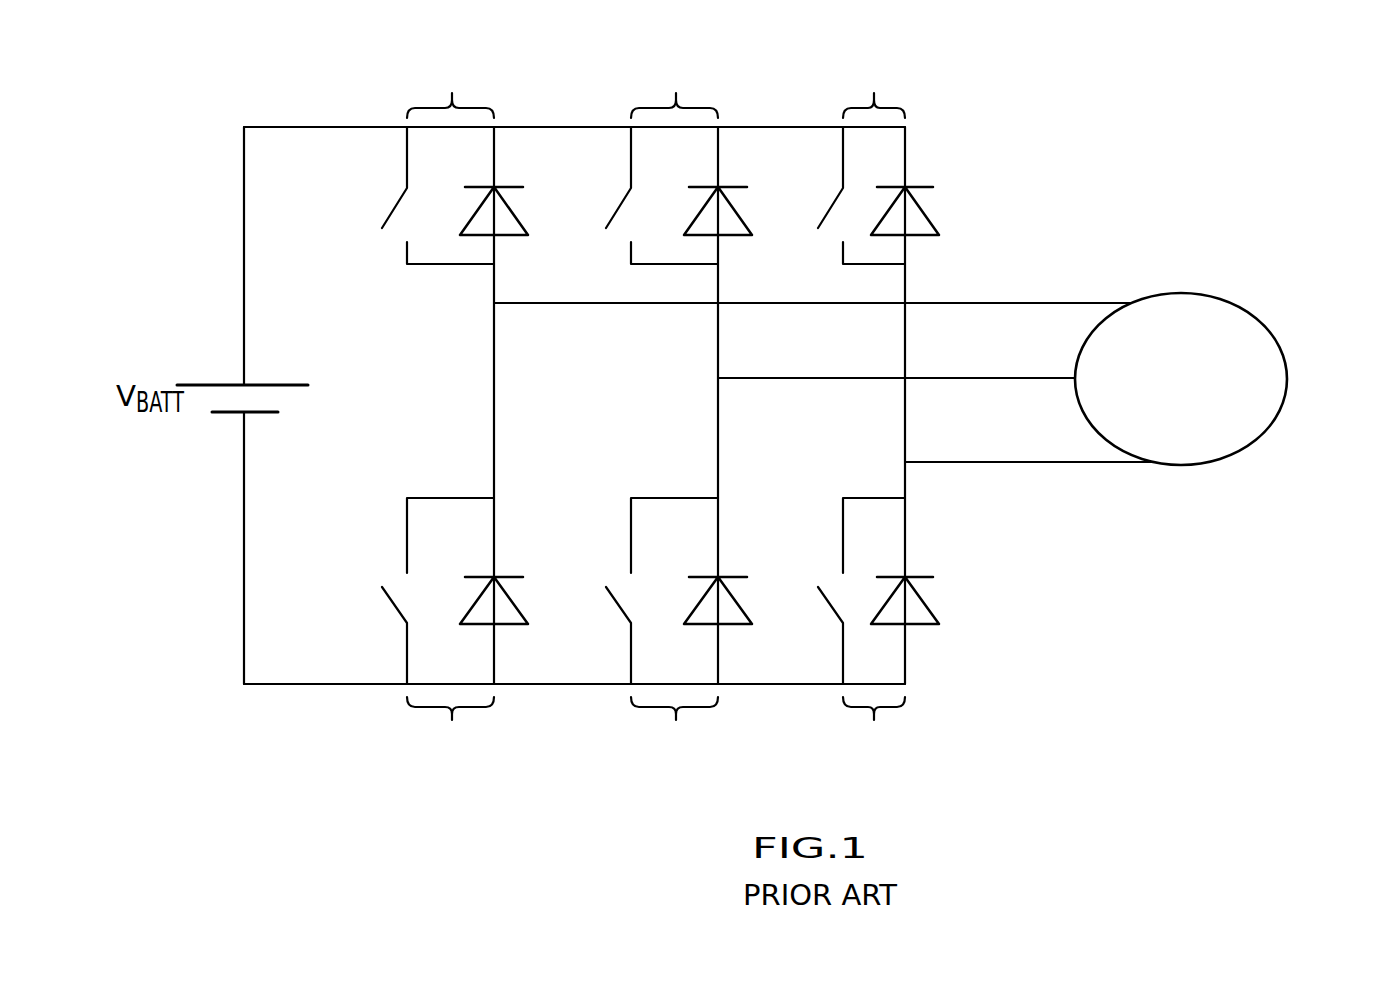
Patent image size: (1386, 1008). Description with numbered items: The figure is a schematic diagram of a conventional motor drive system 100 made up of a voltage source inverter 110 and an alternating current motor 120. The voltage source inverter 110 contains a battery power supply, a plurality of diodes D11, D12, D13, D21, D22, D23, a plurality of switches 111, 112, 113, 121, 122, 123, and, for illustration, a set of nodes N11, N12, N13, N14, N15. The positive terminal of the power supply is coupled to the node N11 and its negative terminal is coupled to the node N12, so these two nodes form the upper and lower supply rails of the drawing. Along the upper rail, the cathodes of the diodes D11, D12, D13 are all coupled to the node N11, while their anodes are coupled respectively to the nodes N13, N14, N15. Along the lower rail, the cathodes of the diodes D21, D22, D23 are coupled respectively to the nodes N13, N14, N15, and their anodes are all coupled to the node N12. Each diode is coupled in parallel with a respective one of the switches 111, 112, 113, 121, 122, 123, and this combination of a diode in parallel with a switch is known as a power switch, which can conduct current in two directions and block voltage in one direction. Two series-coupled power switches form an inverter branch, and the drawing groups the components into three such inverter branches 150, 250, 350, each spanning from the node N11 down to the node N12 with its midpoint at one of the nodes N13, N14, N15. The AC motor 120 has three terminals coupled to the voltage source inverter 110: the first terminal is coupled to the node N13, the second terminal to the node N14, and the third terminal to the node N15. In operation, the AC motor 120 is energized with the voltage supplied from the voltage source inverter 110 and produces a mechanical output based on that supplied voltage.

The motor drive system 100 is at (1085, 156).
The voltage source inverter 110 is at (1085, 640).
The AC motor 120 is at (1287, 375).
The inverter branch 150 is at (450, 406).
The inverter branch 250 is at (674, 406).
The inverter branch 350 is at (874, 408).
The switch 111 is at (382, 212).
The switch 112 is at (612, 206).
The switch 113 is at (828, 200).
The switch 121 is at (385, 607).
The switch 122 is at (612, 603).
The switch 123 is at (833, 614).
The diode D11 is at (528, 237).
The diode D12 is at (752, 237).
The diode D13 is at (939, 237).
The diode D21 is at (528, 626).
The diode D22 is at (752, 626).
The diode D23 is at (939, 626).
The node N11 is at (494, 127).
The node N12 is at (494, 684).
The node N13 is at (494, 303).
The node N14 is at (718, 378).
The node N15 is at (905, 462).